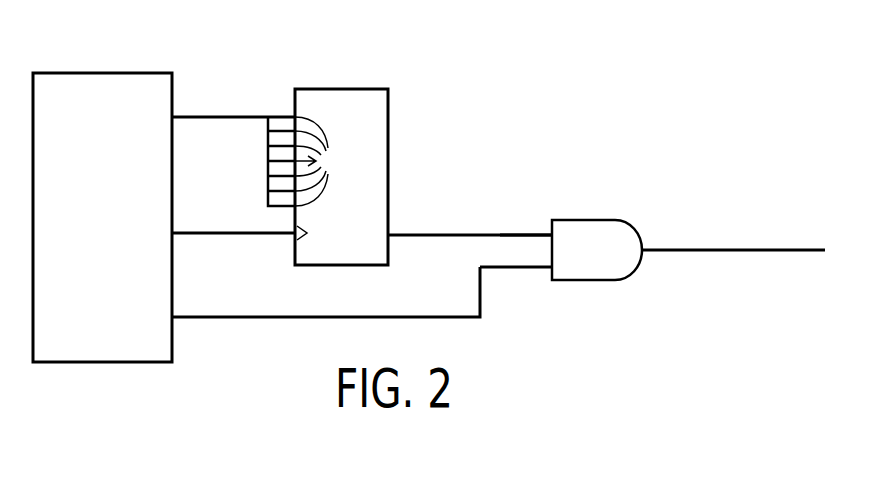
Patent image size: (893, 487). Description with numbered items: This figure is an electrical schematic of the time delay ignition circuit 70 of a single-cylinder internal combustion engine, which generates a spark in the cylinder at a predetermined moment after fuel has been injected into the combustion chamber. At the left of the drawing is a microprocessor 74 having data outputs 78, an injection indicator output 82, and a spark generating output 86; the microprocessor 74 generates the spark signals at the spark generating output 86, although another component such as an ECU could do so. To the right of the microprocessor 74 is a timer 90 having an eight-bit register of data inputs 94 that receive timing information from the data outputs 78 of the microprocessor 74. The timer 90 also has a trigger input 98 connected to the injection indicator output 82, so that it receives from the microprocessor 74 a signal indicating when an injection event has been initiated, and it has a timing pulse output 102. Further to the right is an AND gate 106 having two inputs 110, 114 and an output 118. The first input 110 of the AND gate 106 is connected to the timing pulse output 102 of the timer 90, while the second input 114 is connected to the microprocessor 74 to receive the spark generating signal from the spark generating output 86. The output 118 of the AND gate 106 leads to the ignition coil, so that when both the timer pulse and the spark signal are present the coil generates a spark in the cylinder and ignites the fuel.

The time delay ignition circuit 70 is at (438, 68).
The microprocessor 74 is at (104, 354).
The data outputs 78 is at (175, 113).
The injection indicator output 82 is at (175, 230).
The spark generating output 86 is at (175, 315).
The timer 90 is at (368, 88).
The data inputs 94 is at (306, 161).
The trigger input 98 is at (292, 238).
The timing pulse output 102 is at (390, 234).
The AND gate 106 is at (610, 264).
The input of AND gate 110 is at (550, 233).
The input of AND gate 114 is at (548, 272).
The output of AND gate 118 is at (645, 254).